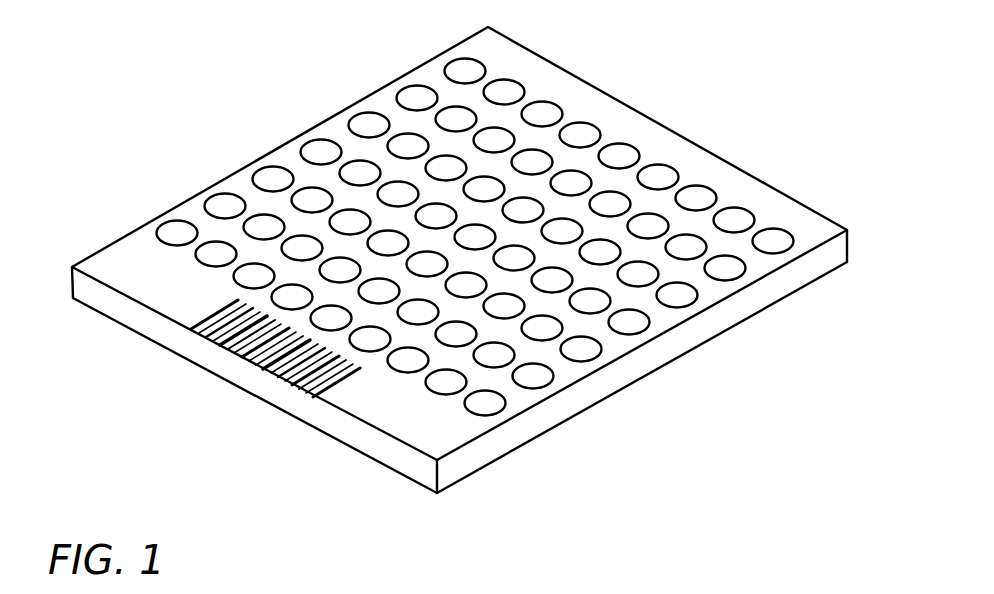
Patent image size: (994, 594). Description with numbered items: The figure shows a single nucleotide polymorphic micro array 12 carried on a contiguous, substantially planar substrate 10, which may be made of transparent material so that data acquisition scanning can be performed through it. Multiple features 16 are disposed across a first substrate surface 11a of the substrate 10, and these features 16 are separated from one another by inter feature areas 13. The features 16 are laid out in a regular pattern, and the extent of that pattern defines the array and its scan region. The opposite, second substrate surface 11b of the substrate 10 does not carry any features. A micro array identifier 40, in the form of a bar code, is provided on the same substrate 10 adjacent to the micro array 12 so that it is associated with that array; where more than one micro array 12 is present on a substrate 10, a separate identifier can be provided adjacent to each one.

The substrate 10 is at (537, 418).
The first substrate surface 11a is at (781, 216).
The second substrate surface 11b is at (719, 335).
The micro array 12 is at (358, 65).
The inter feature areas 13 is at (247, 198).
The features 16 is at (273, 180).
The micro array identifier 40 is at (246, 357).